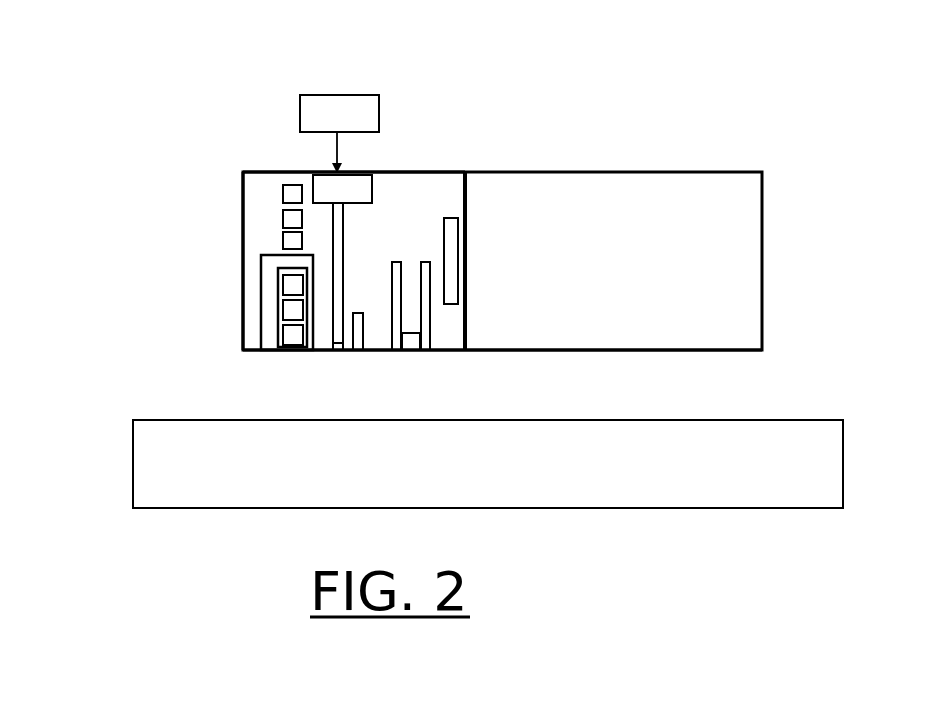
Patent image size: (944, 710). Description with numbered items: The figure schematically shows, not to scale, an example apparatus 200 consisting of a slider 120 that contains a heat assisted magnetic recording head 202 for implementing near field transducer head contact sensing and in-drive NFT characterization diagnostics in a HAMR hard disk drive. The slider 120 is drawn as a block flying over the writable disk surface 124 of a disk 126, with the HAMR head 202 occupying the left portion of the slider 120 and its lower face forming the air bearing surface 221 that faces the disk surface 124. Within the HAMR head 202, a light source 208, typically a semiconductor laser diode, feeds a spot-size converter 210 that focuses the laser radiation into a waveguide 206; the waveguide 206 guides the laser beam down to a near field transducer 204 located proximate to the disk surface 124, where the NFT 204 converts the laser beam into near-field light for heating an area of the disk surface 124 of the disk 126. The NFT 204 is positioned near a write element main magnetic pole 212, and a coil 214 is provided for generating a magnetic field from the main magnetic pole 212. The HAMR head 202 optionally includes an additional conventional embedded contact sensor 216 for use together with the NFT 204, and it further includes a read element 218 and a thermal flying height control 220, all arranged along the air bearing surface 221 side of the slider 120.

The apparatus 200 is at (533, 42).
The slider 120 is at (777, 143).
The heat assisted magnetic recording (HAMR) head 202 is at (300, 173).
The air bearing surface 221 is at (260, 350).
The light source 208 is at (339, 133).
The spot-size converter 210 is at (342, 189).
The waveguide 206 is at (340, 278).
The near field transducer (NFT) 204 is at (338, 347).
The coil 214 is at (272, 193).
The write element main magnetic pole 212 is at (270, 340).
The embedded contact sensor (ECS) 216 is at (358, 343).
The read element 218 is at (413, 342).
The thermal flying height control 220 is at (451, 302).
The disk 126 is at (790, 504).
The disk surface 124 is at (573, 420).